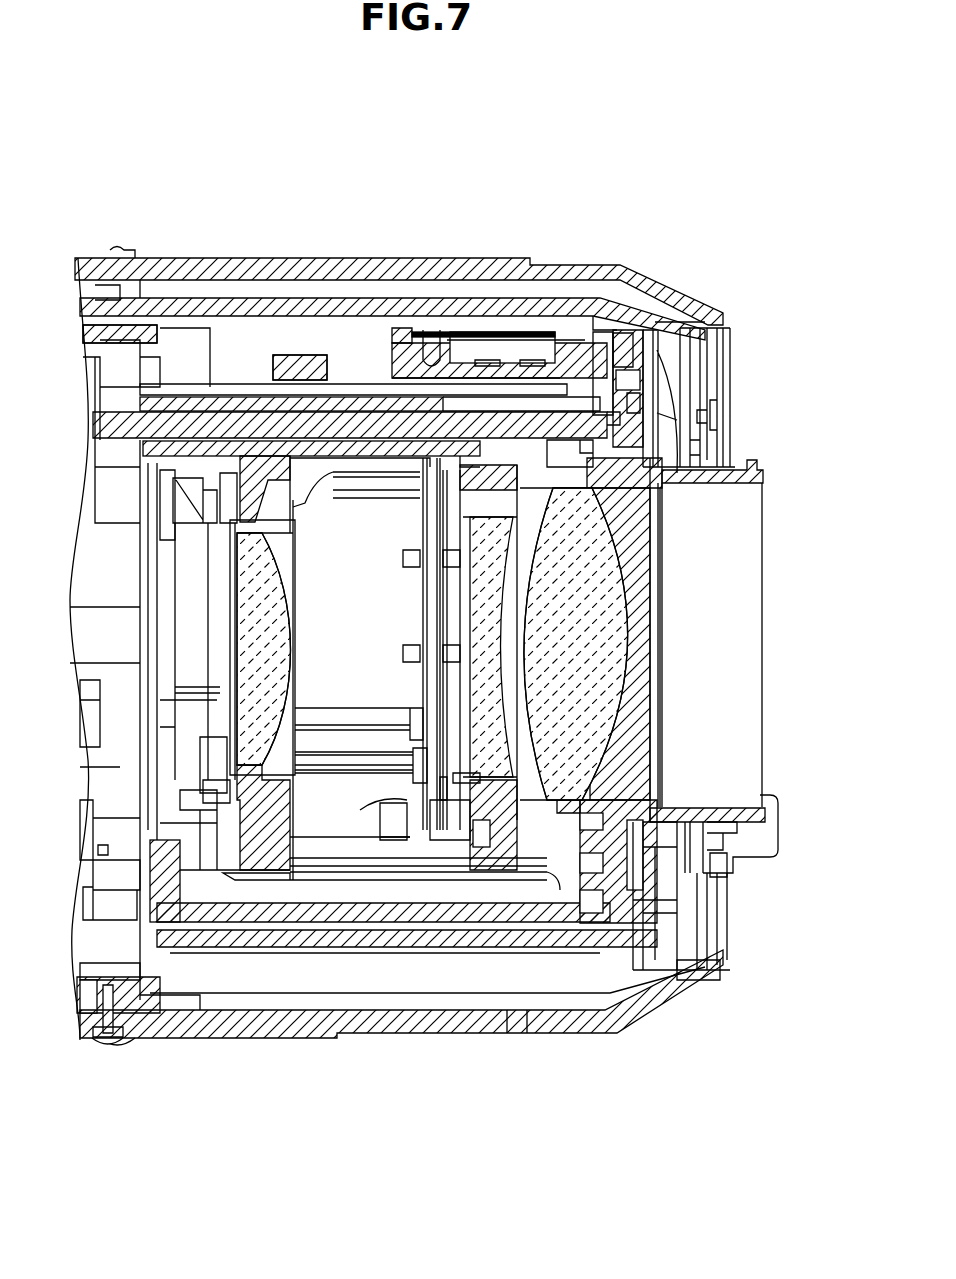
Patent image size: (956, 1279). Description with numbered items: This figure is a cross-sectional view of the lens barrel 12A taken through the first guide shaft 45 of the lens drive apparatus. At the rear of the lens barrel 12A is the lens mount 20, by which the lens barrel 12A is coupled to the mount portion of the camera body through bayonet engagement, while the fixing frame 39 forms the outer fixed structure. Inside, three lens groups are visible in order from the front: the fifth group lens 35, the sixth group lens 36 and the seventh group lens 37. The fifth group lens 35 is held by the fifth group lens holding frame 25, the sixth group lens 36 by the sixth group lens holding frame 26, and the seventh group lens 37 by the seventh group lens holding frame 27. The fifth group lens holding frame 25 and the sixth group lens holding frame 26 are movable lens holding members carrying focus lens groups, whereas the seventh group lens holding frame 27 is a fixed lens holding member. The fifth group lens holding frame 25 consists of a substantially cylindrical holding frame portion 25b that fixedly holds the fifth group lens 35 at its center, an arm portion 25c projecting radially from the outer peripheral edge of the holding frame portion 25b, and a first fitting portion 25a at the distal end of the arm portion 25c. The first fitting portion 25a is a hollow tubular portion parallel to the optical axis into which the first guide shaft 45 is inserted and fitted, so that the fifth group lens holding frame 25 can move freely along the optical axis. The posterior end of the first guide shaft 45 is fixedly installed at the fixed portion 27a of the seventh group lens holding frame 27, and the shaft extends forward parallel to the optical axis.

The lens barrel 12A is at (640, 162).
The lens mount 20 is at (740, 458).
The fifth group lens holding frame 25 is at (303, 190).
The first fitting portion 25a is at (297, 393).
The holding frame portion 25b is at (240, 520).
The arm portion 25c is at (263, 470).
The sixth group lens holding frame 26 is at (500, 760).
The seventh group lens holding frame 27 is at (650, 790).
The fixed portion 27a is at (612, 405).
The fifth group lens 35 is at (295, 778).
The sixth group lens 36 is at (492, 803).
The seventh group lens 37 is at (593, 610).
The fixing frame 39 is at (352, 275).
The first guide shaft 45 is at (530, 425).